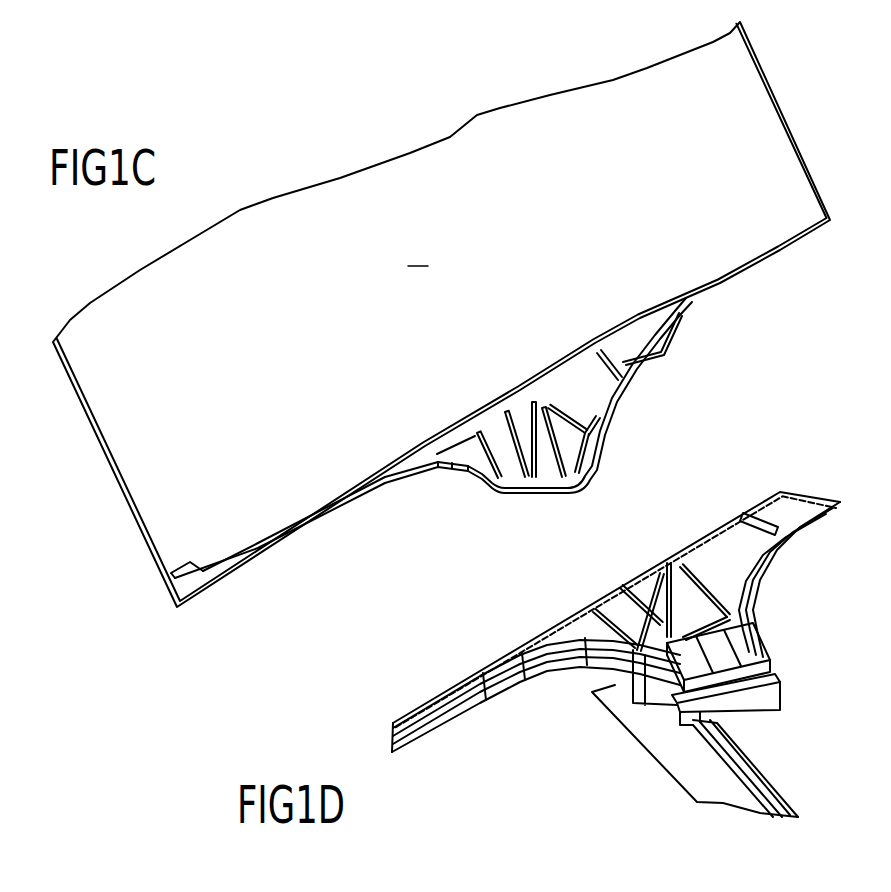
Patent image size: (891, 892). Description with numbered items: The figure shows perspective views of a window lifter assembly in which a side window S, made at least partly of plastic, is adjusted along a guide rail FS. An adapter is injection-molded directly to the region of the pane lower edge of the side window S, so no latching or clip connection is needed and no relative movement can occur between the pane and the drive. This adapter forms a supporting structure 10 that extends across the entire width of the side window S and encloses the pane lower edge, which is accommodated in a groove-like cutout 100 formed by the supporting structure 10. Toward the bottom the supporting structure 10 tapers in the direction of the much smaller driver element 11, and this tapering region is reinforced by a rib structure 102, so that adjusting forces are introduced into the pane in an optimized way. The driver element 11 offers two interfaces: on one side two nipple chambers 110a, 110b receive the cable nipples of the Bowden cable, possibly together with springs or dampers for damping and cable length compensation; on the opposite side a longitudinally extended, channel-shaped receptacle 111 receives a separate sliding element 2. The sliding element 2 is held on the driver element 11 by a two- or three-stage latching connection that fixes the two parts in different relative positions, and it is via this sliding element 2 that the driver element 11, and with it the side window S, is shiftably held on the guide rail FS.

In FIG. 1C, the supporting structure 10 is at (716, 316).
In FIG. 1D, the supporting structure 10 is at (774, 476).
In FIG. 1C, the rib structure 102 is at (608, 409).
In FIG. 1D, the rib structure 102 is at (550, 670).
In FIG. 1C, the groove-like cutout 100 is at (188, 564).
In FIG. 1C, the side window S is at (418, 254).
In FIG. 1D, the driver element 11 is at (793, 658).
In FIG. 1D, the nipple chamber 110a is at (712, 640).
In FIG. 1D, the nipple chamber 110b is at (742, 697).
In FIG. 1D, the channel-shaped receptacle 111 is at (676, 720).
In FIG. 1D, the sliding element 2 is at (744, 737).
In FIG. 1D, the guide rail FS is at (695, 785).